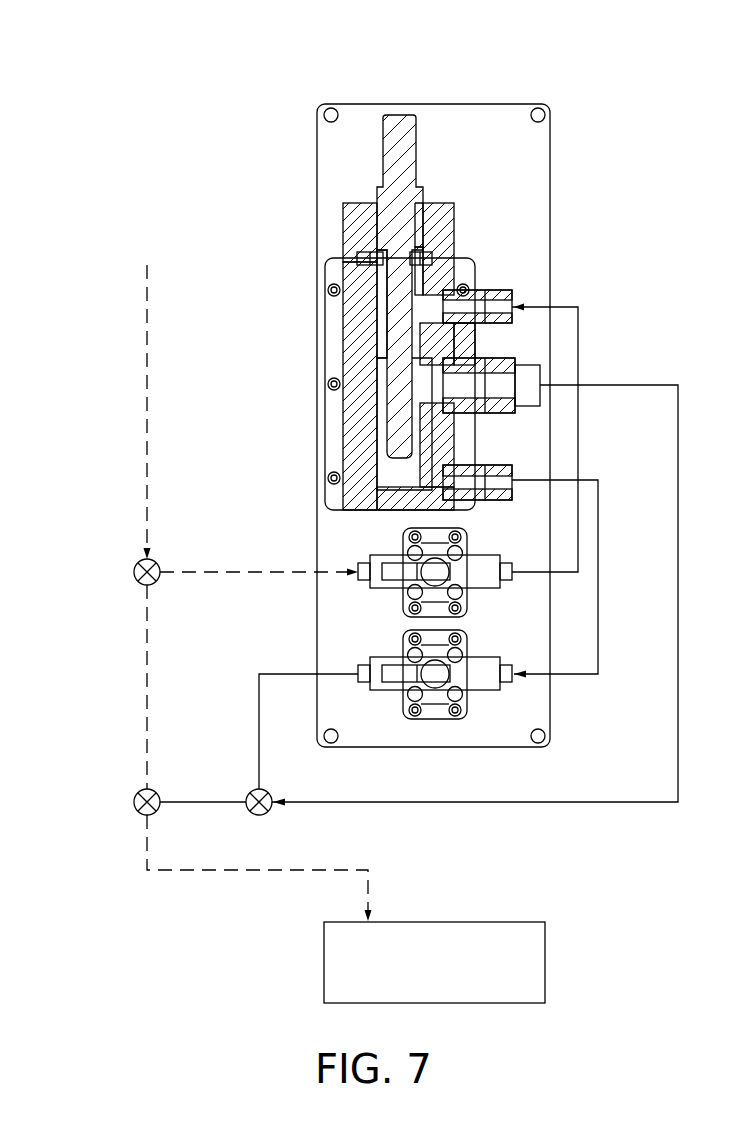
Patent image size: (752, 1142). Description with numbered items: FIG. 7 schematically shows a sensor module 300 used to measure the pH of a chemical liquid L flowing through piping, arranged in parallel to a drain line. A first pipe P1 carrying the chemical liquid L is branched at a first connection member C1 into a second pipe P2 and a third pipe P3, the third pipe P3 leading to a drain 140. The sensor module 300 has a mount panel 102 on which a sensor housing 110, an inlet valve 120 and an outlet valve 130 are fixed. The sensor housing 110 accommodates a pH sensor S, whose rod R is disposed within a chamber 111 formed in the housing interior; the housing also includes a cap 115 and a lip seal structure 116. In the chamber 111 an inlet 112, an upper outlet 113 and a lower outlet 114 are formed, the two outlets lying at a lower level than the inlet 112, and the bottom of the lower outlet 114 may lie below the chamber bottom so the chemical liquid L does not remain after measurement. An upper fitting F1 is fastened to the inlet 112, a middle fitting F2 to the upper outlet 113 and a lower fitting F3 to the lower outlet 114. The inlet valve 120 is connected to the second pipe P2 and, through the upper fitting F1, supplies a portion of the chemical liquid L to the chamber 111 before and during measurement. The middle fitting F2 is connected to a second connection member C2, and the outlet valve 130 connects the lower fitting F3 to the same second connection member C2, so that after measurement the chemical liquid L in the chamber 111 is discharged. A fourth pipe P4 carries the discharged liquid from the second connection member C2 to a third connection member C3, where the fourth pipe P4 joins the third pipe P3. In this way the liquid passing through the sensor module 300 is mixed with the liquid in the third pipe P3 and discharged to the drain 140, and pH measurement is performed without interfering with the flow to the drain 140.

The sensor module 300 is at (430, 34).
The mount panel 102 is at (553, 141).
The sensor housing 110 is at (478, 266).
The pH sensor S is at (378, 184).
The cap 115 is at (358, 227).
The lip seal structure 116 is at (375, 263).
The chamber 111 is at (373, 300).
The rod R is at (398, 345).
The chemical liquid L is at (378, 468).
The inlet 112 is at (440, 256).
The upper outlet 113 is at (433, 350).
The lower outlet 114 is at (445, 462).
The upper fitting F1 is at (512, 298).
The middle fitting F2 is at (541, 373).
The lower fitting F3 is at (513, 468).
The inlet valve 120 is at (358, 556).
The outlet valve 130 is at (358, 658).
The drain 140 is at (324, 960).
The first pipe P1 is at (147, 428).
The second pipe P2 is at (184, 570).
The third pipe P3 is at (147, 708).
The fourth pipe P4 is at (203, 800).
The first connection member C1 is at (134, 573).
The second connection member C2 is at (270, 811).
The third connection member C3 is at (134, 803).